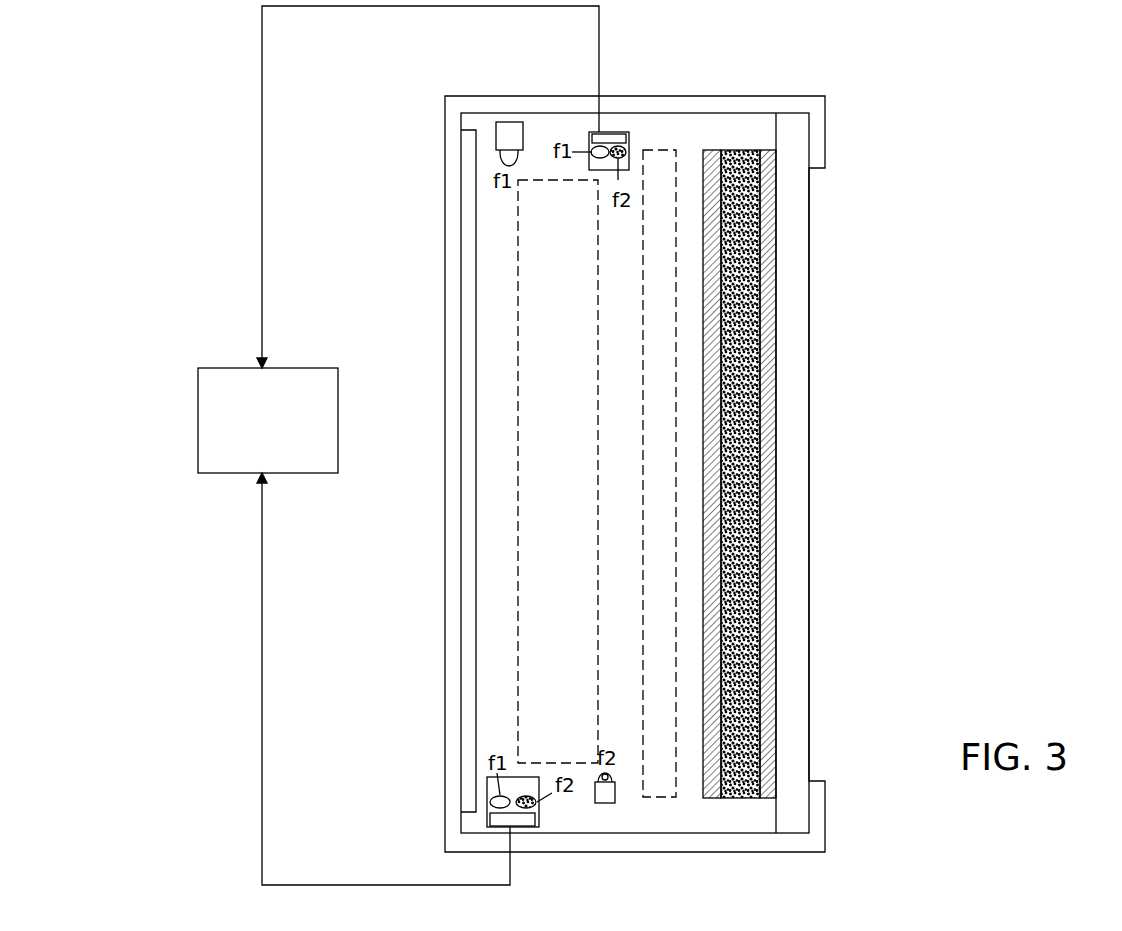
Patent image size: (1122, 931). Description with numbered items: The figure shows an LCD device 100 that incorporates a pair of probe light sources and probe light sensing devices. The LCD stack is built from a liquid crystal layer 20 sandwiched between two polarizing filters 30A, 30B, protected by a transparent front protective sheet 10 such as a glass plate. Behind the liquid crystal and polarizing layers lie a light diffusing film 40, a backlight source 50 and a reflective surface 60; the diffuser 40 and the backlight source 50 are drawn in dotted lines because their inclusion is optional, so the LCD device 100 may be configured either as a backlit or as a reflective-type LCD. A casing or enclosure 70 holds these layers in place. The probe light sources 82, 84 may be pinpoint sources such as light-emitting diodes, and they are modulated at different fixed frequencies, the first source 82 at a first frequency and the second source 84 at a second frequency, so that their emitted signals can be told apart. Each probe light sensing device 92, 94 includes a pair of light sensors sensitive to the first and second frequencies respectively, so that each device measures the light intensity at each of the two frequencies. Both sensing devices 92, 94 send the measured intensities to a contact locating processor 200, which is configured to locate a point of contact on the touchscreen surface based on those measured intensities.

The LCD device 100 is at (913, 36).
The transparent front protective sheet 10 is at (809, 739).
The liquid crystal layer 20 is at (740, 474).
The polarizing filter 30A is at (760, 150).
The polarizing filter 30B is at (710, 150).
The light diffusing film 40 is at (659, 473).
The backlight source 50 is at (558, 471).
The reflective surface 60 is at (470, 618).
The casing 70 is at (445, 582).
The probe light source 82 is at (500, 130).
The probe light source 84 is at (607, 797).
The probe light sensing device 92 is at (533, 827).
The probe light sensing device 94 is at (623, 132).
The contact locating processor 200 is at (268, 420).